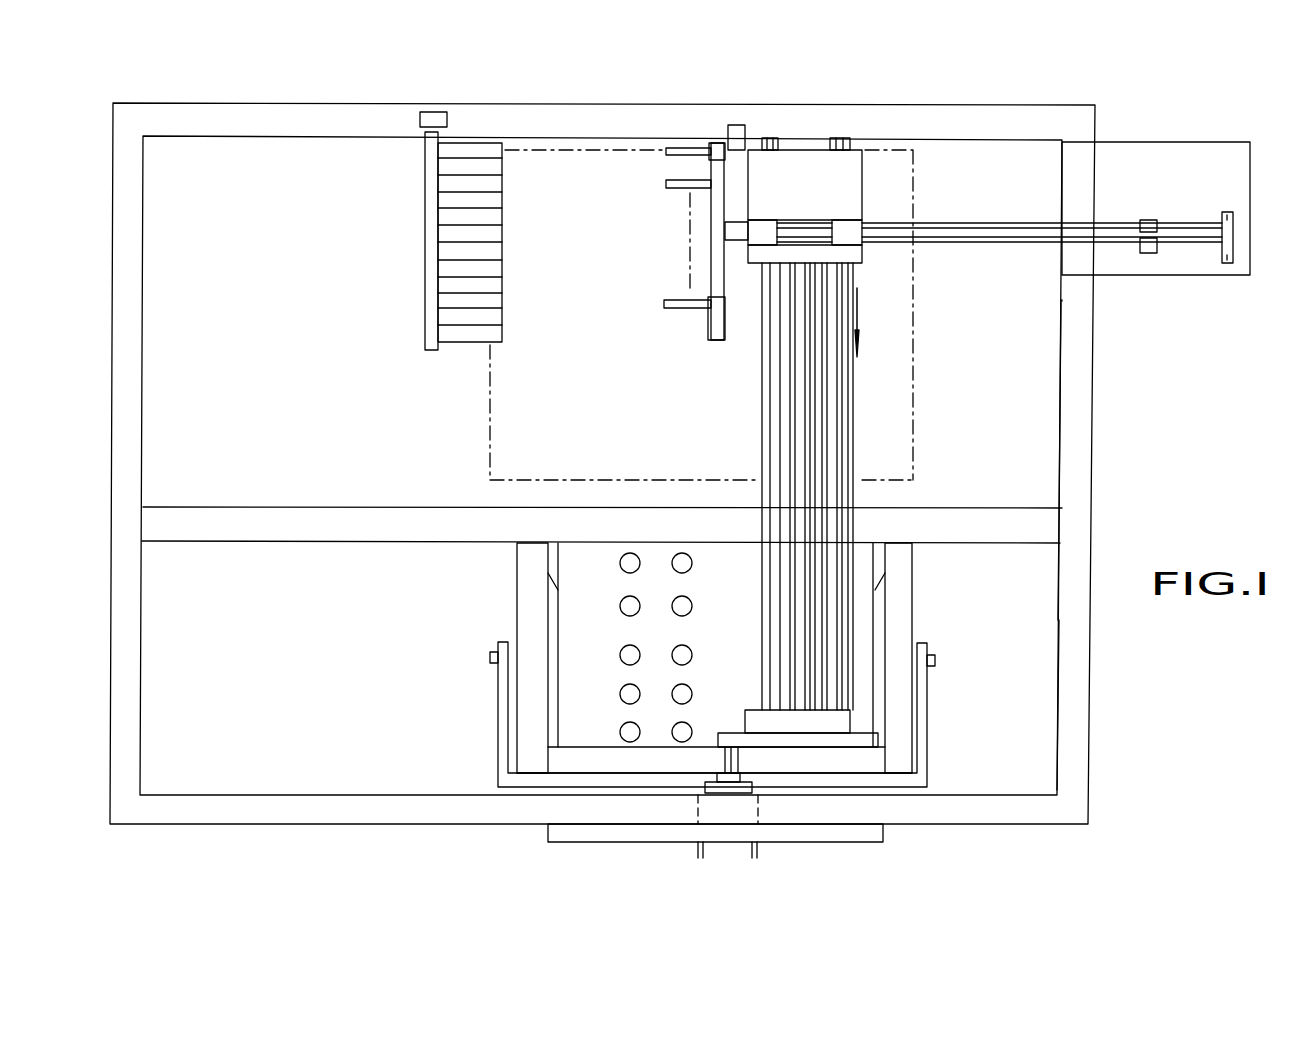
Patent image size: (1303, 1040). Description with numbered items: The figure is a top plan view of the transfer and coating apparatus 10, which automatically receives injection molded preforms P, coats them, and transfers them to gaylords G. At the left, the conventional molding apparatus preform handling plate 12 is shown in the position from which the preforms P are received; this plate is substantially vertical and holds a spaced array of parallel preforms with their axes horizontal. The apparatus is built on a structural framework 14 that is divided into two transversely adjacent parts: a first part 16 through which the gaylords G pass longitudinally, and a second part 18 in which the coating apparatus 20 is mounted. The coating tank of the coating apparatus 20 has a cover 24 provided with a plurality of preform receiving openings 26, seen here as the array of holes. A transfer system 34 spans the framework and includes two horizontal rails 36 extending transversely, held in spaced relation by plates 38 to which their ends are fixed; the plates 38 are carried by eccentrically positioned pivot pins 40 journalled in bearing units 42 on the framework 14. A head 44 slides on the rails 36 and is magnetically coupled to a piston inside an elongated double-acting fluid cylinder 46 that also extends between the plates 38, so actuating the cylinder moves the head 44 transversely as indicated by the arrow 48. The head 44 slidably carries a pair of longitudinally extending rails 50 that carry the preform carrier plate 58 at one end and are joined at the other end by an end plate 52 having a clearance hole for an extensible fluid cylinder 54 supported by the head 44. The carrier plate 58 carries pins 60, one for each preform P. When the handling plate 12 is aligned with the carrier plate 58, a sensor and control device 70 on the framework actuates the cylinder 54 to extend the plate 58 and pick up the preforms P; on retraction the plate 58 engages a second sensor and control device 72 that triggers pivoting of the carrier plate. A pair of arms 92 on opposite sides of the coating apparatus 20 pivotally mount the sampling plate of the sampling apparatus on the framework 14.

The transfer and coating apparatus 10 is at (730, 93).
The molding apparatus preform handling plate 12 is at (450, 241).
The structural framework 14 is at (449, 93).
The first part 16 is at (1040, 450).
The second part 18 is at (1040, 742).
The coating apparatus 20 is at (696, 707).
The cover 24 is at (650, 645).
The preform receiving openings 26 is at (688, 658).
The transfer system 34 is at (813, 483).
The horizontal rails 36 is at (762, 370).
The plates 38 is at (800, 718).
The pivot pins 40 is at (723, 762).
The bearing units 42 is at (742, 778).
The head 44 is at (855, 170).
The fluid cylinder 46 is at (810, 447).
The arrow 48 is at (857, 298).
The longitudinally extending rails 50 is at (1013, 224).
The end plate 52 is at (1227, 212).
The extensible fluid cylinder 54 is at (1100, 222).
The preform carrier plate 58 is at (680, 254).
The pins 60 is at (712, 275).
The sensor and control device 70 is at (432, 118).
The sensor and control device 72 is at (745, 140).
The arms 92 is at (498, 720).
The preforms P is at (505, 246).
The gaylords G is at (922, 385).